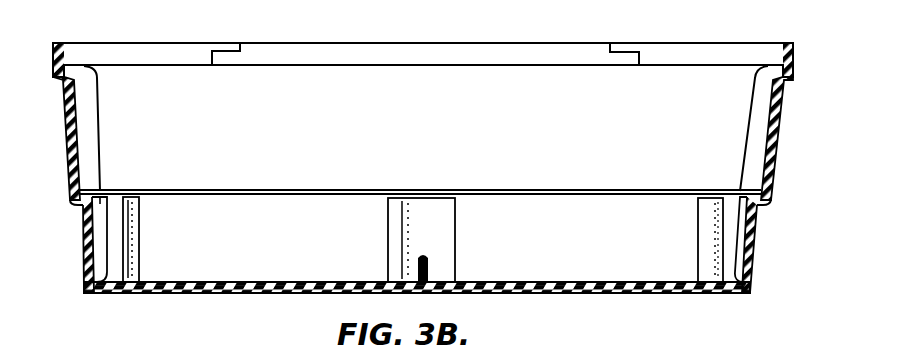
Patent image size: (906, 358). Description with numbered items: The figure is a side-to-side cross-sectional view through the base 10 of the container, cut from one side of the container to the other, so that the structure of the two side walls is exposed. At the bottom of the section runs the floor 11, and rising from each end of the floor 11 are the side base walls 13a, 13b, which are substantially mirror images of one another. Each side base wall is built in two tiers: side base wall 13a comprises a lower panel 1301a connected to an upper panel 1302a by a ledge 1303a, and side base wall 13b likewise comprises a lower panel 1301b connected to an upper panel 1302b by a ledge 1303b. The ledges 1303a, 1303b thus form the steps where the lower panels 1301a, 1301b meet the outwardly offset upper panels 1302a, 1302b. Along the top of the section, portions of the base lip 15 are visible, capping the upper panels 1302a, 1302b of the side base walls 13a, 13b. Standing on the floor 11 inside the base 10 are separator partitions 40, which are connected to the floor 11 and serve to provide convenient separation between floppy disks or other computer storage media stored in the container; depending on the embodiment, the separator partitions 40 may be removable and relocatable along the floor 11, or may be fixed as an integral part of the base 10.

The base 10 is at (66, 22).
The floor 11 is at (268, 294).
The base lip 15 is at (50, 60).
The side base wall 13a is at (101, 153).
The side base wall 13b is at (740, 160).
The separator partitions 40 is at (140, 240).
The lower panel 1301a is at (82, 262).
The lower panel 1301b is at (753, 258).
The upper panel 1302a is at (68, 135).
The upper panel 1302b is at (775, 124).
The ledge 1303a is at (80, 205).
The ledge 1303b is at (763, 203).